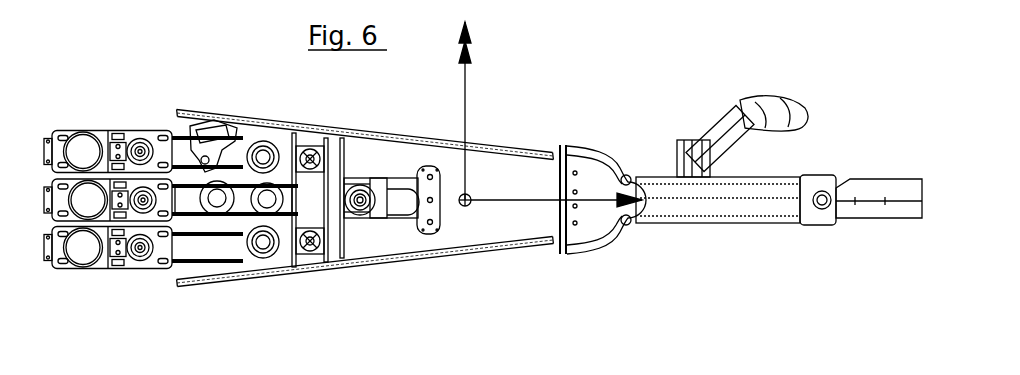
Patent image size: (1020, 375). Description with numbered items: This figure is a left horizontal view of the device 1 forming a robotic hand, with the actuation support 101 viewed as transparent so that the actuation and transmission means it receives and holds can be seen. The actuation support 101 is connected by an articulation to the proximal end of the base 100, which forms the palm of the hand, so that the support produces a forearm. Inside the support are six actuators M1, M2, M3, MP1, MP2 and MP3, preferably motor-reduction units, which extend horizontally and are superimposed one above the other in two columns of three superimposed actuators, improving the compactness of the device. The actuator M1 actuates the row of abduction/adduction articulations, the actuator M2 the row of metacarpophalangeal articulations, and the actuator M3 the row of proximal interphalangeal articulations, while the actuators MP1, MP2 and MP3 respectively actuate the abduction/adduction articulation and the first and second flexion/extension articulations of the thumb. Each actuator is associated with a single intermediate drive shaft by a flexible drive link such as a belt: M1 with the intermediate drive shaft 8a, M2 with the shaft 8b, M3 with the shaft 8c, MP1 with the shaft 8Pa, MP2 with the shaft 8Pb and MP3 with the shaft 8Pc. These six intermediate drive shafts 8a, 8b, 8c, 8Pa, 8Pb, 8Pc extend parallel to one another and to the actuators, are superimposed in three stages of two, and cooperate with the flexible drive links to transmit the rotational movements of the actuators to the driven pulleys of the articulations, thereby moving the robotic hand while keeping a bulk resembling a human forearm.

The device forming a robotic hand 1 is at (614, 102).
The actuator MP1 is at (140, 202).
The actuator MP2 is at (85, 252).
The actuator MP3 is at (78, 152).
The actuator M1 is at (80, 200).
The actuator M2 is at (138, 250).
The actuator M3 is at (143, 150).
The intermediate drive shaft 8a is at (222, 196).
The intermediate drive shaft 8b is at (266, 248).
The intermediate drive shaft 8c is at (267, 155).
The intermediate drive shaft 8Pa is at (362, 205).
The intermediate drive shaft 8Pb is at (308, 243).
The intermediate drive shaft 8Pc is at (312, 160).
The base 100 is at (728, 213).
The actuation support 101 is at (483, 250).